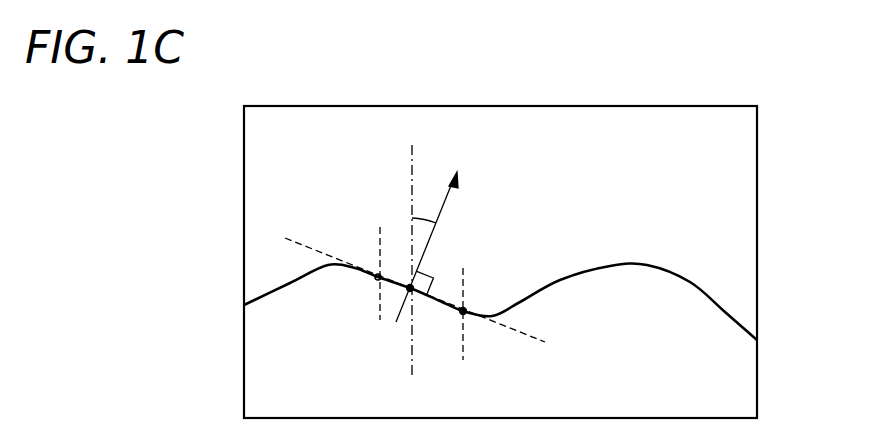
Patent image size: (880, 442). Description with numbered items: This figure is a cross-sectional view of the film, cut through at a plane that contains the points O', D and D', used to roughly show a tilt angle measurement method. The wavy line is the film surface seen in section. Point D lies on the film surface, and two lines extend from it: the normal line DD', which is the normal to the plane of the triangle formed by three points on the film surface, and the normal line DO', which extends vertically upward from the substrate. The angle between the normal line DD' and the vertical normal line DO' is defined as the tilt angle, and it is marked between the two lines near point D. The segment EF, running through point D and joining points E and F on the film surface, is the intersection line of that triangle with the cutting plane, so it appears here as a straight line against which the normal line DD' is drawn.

The point O' is at (411, 248).
The point D' is at (437, 236).
The point F is at (369, 273).
The point D is at (419, 305).
The point E is at (471, 314).